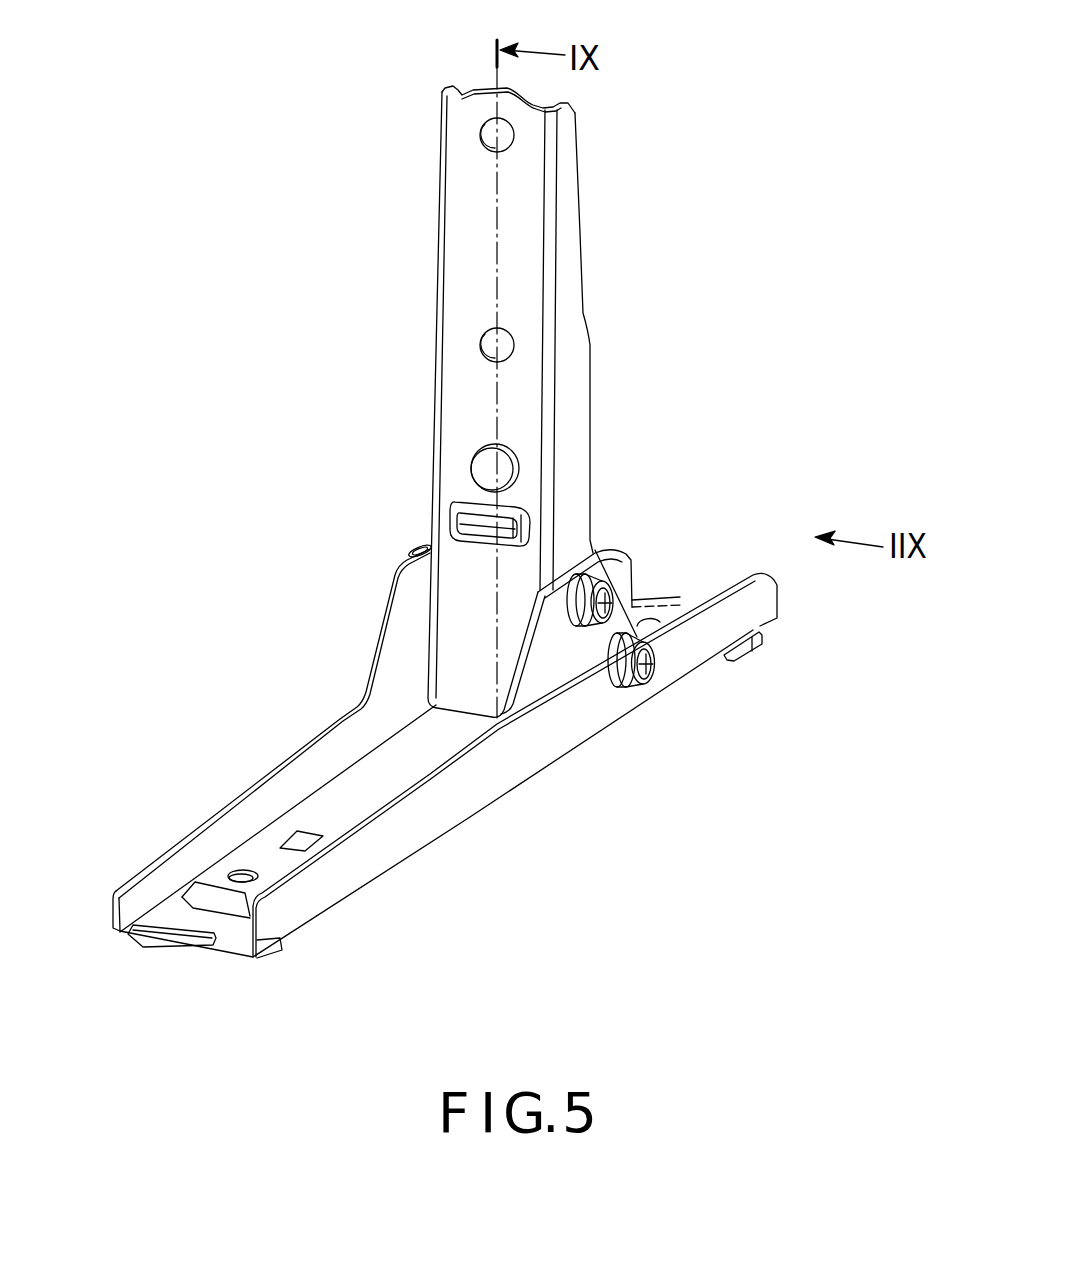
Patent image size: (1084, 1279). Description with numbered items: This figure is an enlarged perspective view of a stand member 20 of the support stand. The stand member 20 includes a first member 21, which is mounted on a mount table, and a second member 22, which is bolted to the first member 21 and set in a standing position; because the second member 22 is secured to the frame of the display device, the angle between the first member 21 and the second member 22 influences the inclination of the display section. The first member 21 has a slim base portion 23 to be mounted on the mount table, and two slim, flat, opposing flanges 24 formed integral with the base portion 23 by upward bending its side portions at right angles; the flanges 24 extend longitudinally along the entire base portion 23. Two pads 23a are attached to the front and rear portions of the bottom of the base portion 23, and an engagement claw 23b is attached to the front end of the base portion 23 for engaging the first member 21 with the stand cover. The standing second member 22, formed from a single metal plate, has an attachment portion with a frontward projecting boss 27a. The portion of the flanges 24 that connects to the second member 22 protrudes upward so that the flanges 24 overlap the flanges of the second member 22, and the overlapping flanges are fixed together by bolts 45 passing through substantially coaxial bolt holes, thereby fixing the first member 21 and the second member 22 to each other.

The stand member 20 is at (736, 281).
The first member 21 is at (323, 710).
The second member 22 is at (428, 270).
The base portion 23 is at (393, 783).
The pads 23a is at (753, 655).
The engagement claw 23b is at (142, 937).
The flanges 24 is at (408, 630).
The boss 27a is at (527, 530).
The bolts 45 is at (427, 552).